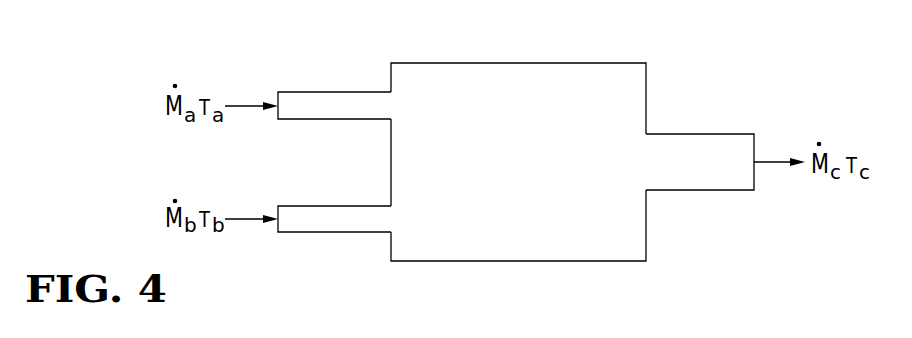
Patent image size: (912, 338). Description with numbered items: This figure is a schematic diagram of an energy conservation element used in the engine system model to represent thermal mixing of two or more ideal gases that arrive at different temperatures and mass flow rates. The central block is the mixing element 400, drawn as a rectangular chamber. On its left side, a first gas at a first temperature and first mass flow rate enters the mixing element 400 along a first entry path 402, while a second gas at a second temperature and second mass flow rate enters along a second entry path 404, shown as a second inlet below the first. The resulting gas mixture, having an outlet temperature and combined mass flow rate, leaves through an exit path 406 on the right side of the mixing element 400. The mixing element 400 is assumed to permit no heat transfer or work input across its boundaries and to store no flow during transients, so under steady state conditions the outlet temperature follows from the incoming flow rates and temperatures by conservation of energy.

The mixing element 400 is at (627, 79).
The first entry path 402 is at (303, 110).
The second entry path 404 is at (321, 218).
The exit path 406 is at (722, 153).